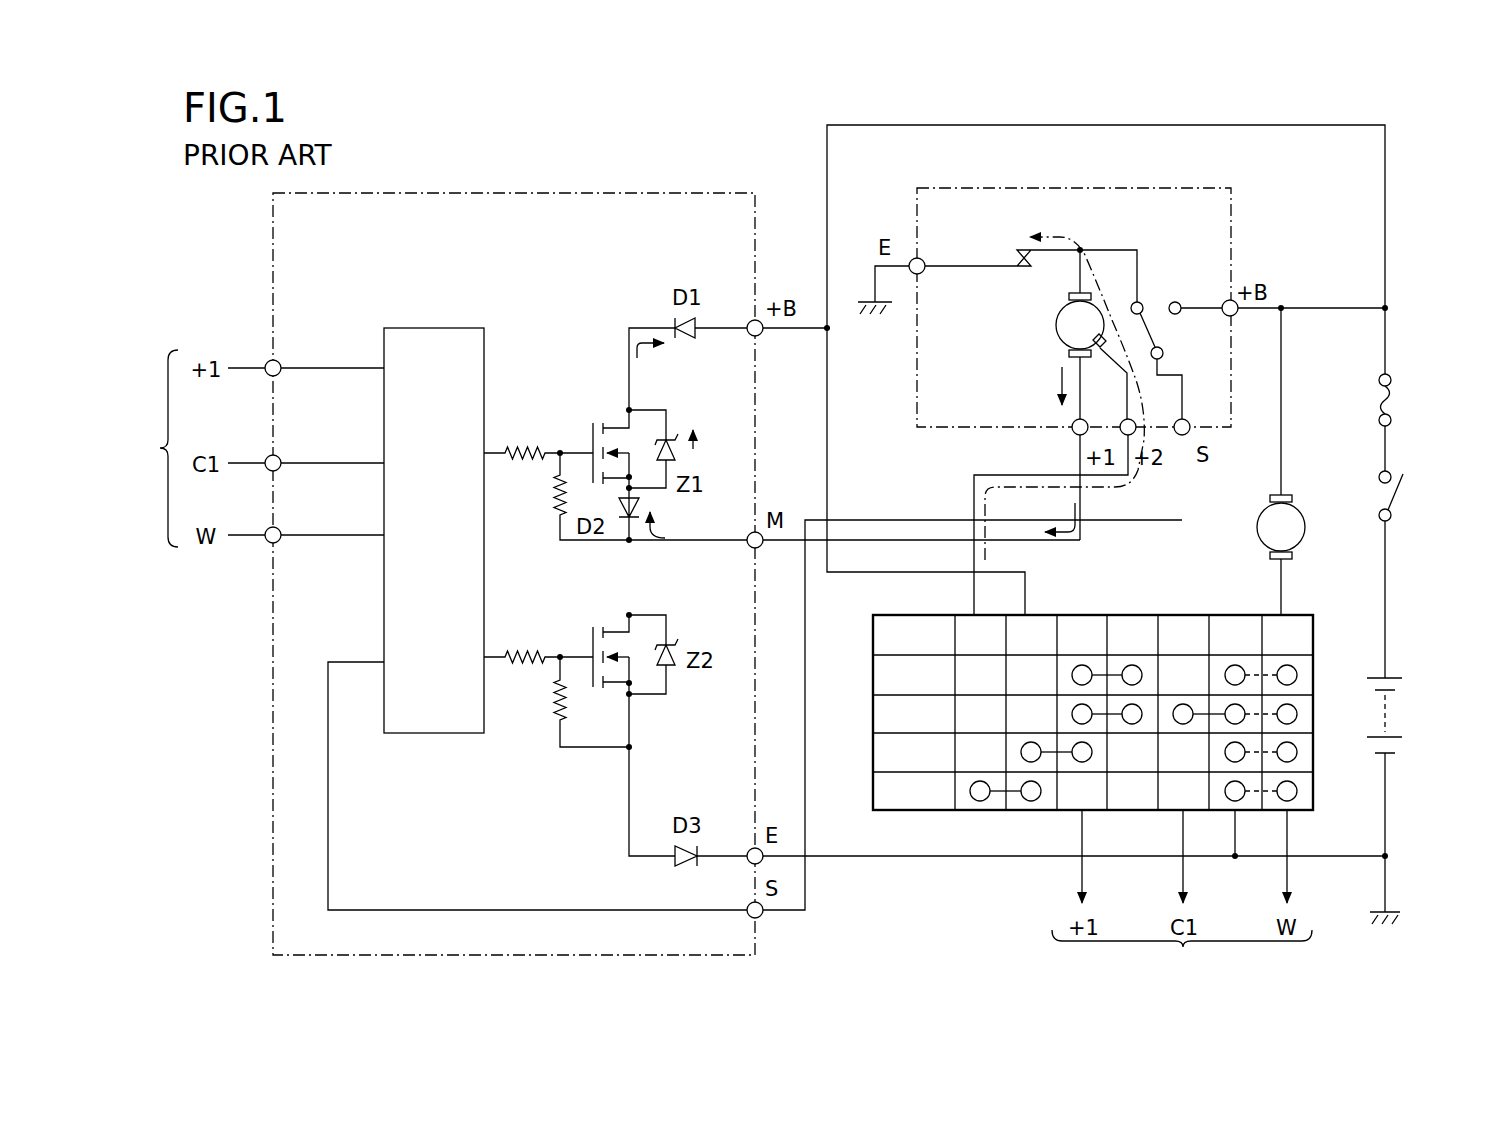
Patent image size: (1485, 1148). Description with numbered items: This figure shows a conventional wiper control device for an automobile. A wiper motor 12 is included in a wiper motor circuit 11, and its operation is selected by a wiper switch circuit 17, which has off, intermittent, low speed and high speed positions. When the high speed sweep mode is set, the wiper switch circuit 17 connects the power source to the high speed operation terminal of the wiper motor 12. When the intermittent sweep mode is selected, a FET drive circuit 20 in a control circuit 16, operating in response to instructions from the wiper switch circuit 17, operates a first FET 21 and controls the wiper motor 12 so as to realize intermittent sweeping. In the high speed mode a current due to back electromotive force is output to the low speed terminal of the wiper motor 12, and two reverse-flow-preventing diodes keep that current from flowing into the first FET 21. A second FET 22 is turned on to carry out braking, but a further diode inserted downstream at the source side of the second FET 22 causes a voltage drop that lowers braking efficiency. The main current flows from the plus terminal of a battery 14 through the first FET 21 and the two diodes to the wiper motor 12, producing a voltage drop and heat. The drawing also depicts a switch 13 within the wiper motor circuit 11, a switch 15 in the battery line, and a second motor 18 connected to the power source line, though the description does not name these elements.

The wiper motor circuit 11 is at (1093, 181).
The wiper motor 12 is at (1055, 323).
The auto-stop switch 13 is at (1153, 302).
The battery 14 is at (1404, 690).
The ignition switch 15 is at (1398, 494).
The control circuit 16 is at (548, 186).
The wiper switch circuit 17 is at (863, 660).
The washer motor 18 is at (1305, 520).
The FET drive circuit 20 is at (434, 327).
The first FET 21 is at (582, 423).
The second FET 22 is at (580, 633).